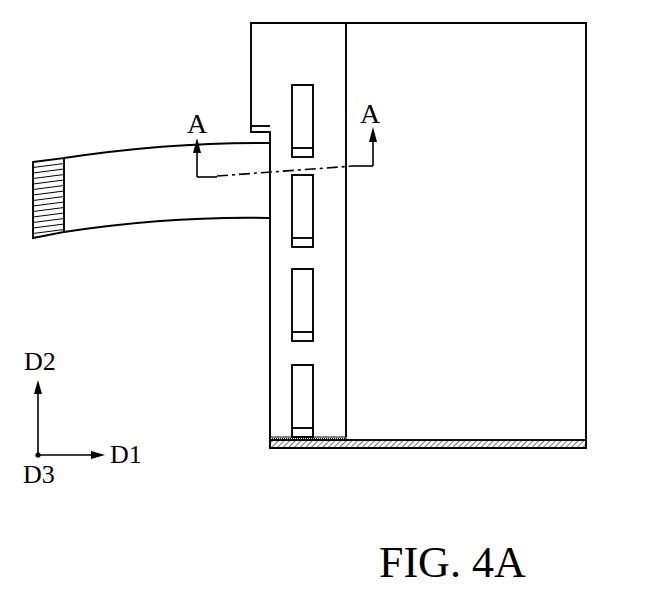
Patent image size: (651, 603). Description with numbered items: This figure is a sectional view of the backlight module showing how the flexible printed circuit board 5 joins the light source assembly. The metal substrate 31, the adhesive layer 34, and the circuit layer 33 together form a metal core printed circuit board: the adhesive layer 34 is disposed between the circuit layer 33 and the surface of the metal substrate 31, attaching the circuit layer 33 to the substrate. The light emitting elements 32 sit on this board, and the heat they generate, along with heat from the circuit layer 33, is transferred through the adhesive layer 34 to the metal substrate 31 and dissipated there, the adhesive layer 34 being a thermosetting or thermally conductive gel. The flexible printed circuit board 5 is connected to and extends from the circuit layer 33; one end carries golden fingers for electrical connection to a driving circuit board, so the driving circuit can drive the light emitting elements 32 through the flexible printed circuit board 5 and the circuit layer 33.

The flexible printed circuit board 5 is at (127, 212).
The metal substrate 31 is at (293, 450).
The light emitting element 32 is at (303, 373).
The circuit layer 33 is at (280, 427).
The adhesive layer 34 is at (320, 450).